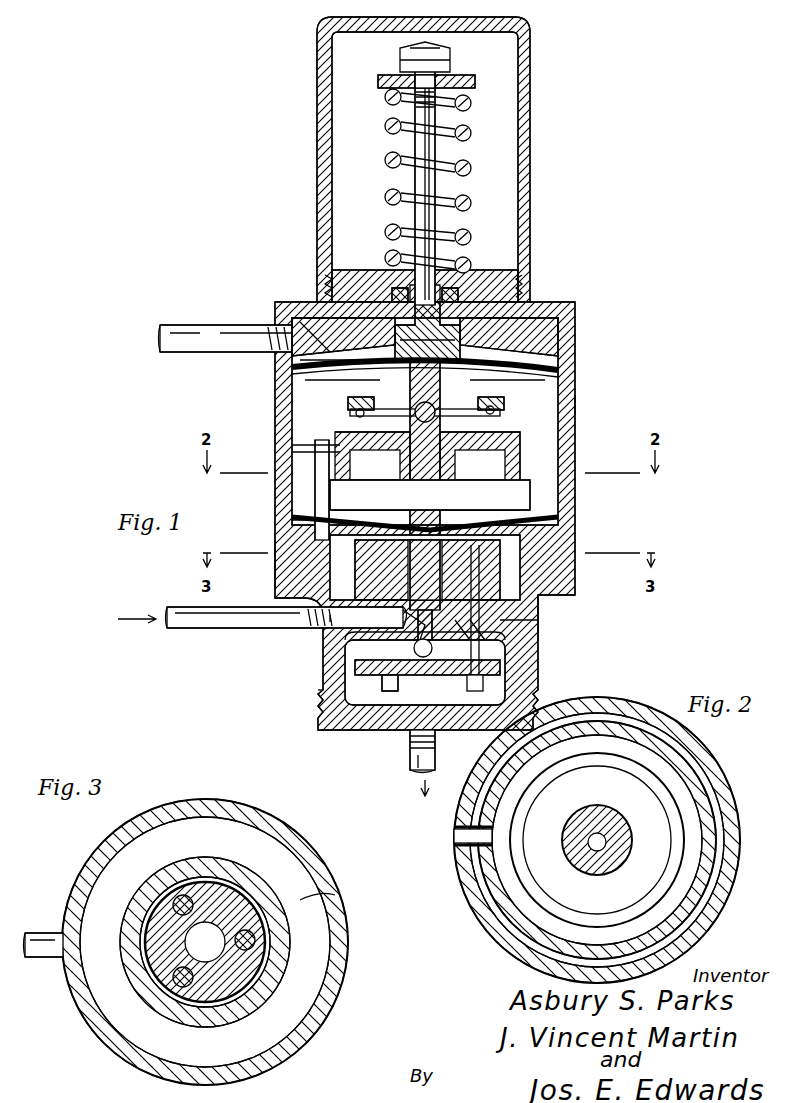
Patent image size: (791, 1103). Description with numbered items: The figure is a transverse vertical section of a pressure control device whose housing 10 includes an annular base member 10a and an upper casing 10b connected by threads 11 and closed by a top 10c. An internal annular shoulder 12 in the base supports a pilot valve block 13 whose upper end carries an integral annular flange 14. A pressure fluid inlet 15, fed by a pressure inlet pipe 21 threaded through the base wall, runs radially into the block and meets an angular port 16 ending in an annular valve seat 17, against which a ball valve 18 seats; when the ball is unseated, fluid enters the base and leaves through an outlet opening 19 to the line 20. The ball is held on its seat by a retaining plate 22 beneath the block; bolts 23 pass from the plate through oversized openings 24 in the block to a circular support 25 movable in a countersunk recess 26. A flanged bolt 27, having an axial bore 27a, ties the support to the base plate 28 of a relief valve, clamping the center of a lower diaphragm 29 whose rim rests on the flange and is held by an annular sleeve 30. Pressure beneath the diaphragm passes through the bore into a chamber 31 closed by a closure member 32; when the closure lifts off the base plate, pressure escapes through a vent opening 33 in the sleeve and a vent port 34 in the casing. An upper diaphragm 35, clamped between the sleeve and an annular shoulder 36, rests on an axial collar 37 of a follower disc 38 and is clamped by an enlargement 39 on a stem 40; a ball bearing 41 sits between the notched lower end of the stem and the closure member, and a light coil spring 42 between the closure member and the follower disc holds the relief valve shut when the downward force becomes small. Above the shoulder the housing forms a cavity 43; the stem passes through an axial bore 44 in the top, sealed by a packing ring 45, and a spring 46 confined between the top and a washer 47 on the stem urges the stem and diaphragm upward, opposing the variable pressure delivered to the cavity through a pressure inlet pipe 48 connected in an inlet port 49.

In FIG. 1, the housing 10 is at (565, 362).
In FIG. 2, the housing 10 is at (472, 888).
In FIG. 3, the housing 10 is at (322, 877).
In FIG. 1, the annular base member 10a is at (322, 692).
In FIG. 1, the upper casing 10b is at (566, 406).
In FIG. 1, the top of the housing 10c is at (332, 268).
In FIG. 1, the threads 11 is at (290, 565).
In FIG. 3, the threads 11 is at (335, 895).
In FIG. 1, the internal annular shoulder 12 is at (330, 660).
In FIG. 1, the pilot valve block 13 is at (510, 646).
In FIG. 3, the pilot valve block 13 is at (278, 927).
In FIG. 1, the integral annular flange 14 is at (522, 562).
In FIG. 1, the pressure fluid inlet 15 is at (350, 640).
In FIG. 1, the angular port 16 is at (472, 680).
In FIG. 1, the annular valve seat 17 is at (390, 678).
In FIG. 1, the ball valve 18 is at (423, 658).
In FIG. 1, the outlet opening 19 is at (410, 738).
In FIG. 1, the line 20 is at (413, 762).
In FIG. 1, the pressure inlet pipe 21 is at (188, 630).
In FIG. 3, the pressure inlet pipe 21 is at (40, 935).
In FIG. 1, the retaining plate 22 is at (500, 668).
In FIG. 1, the bolts 23 is at (530, 652).
In FIG. 3, the bolts 23 is at (255, 942).
In FIG. 1, the openings 24 is at (505, 628).
In FIG. 1, the circular support 25 is at (300, 522).
In FIG. 3, the circular support 25 is at (268, 965).
In FIG. 1, the countersunk recess 26 is at (540, 600).
In FIG. 1, the flanged bolt 27 is at (441, 445).
In FIG. 2, the flanged bolt 27 is at (620, 852).
In FIG. 1, the axial bore 27a is at (423, 422).
In FIG. 2, the axial bore 27a is at (606, 838).
In FIG. 1, the base plate 28 is at (540, 503).
In FIG. 2, the base plate 28 is at (545, 895).
In FIG. 1, the lower diaphragm 29 is at (556, 520).
In FIG. 1, the annular sleeve 30 is at (300, 398).
In FIG. 2, the annular sleeve 30 is at (520, 885).
In FIG. 1, the chamber 31 is at (522, 452).
In FIG. 1, the closure member 32 is at (300, 360).
In FIG. 1, the vent opening 33 is at (316, 486).
In FIG. 2, the vent opening 33 is at (492, 862).
In FIG. 1, the vent port 34 is at (298, 448).
In FIG. 2, the vent port 34 is at (462, 837).
In FIG. 1, the upper diaphragm 35 is at (542, 364).
In FIG. 1, the annular shoulder 36 is at (548, 372).
In FIG. 1, the axial collar 37 is at (460, 340).
In FIG. 1, the follower disc 38 is at (548, 386).
In FIG. 1, the annular flange or enlargement 39 is at (515, 300).
In FIG. 1, the stem 40 is at (432, 190).
In FIG. 1, the ball bearing 41 is at (461, 352).
In FIG. 1, the light coil spring 42 is at (298, 335).
In FIG. 1, the cavity 43 is at (328, 285).
In FIG. 1, the axial bore 44 is at (470, 290).
In FIG. 1, the packing ring 45 is at (458, 296).
In FIG. 1, the spring 46 is at (470, 133).
In FIG. 1, the washer 47 is at (476, 84).
In FIG. 1, the pressure inlet pipe 48 is at (226, 312).
In FIG. 1, the inlet port 49 is at (300, 318).